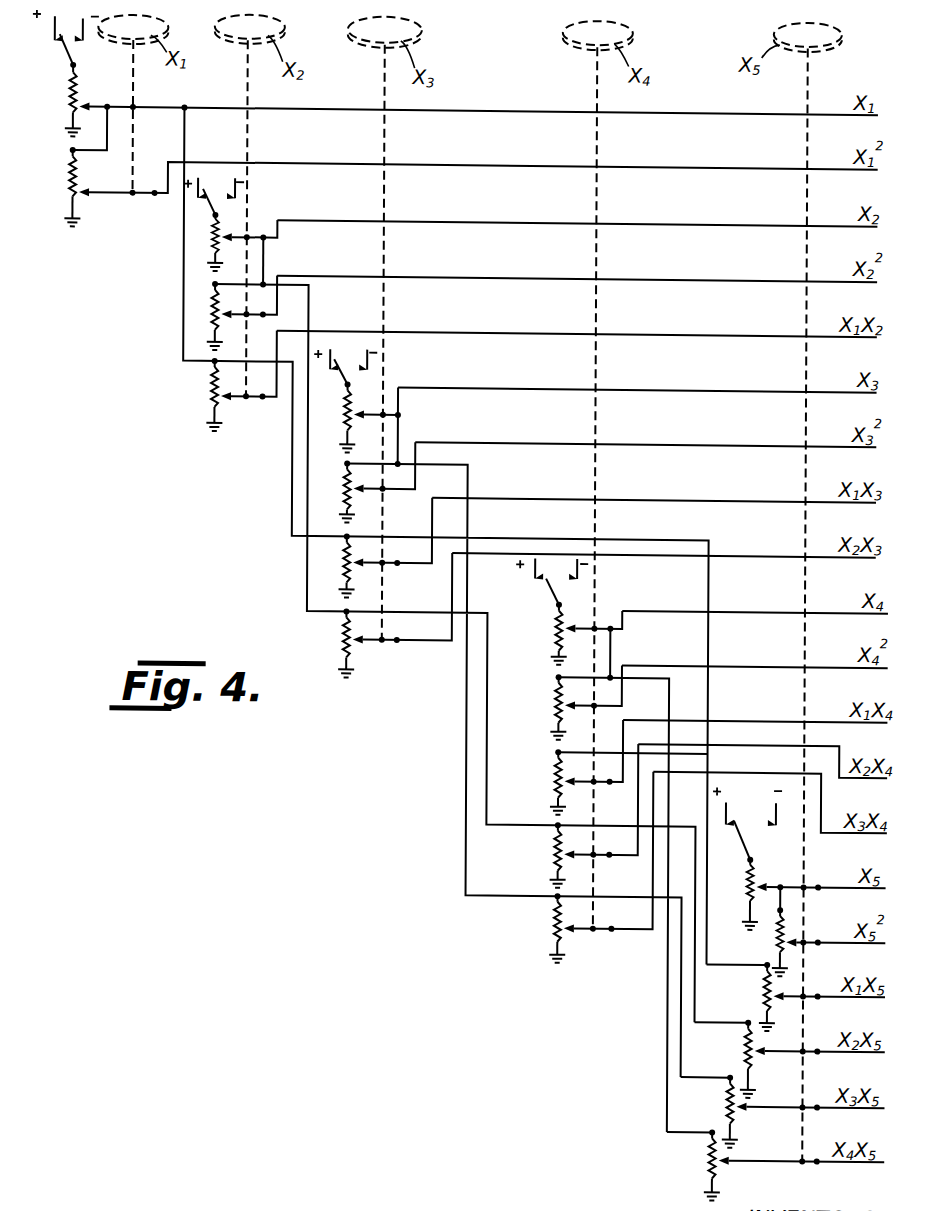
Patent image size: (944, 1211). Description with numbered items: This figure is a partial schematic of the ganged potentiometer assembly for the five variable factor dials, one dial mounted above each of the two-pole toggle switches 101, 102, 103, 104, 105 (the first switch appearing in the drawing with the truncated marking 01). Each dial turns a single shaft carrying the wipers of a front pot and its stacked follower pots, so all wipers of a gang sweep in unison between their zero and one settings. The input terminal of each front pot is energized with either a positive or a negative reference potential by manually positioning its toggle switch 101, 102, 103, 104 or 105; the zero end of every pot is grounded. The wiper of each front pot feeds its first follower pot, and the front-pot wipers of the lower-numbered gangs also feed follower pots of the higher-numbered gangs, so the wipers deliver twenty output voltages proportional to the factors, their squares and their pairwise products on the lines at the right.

The two-pole toggle switch 101 is at (68, 118).
The first multiplier unit (X1 potentiometer chain with REF switch) 01 is at (60, 53).
The two-pole toggle switch 102 is at (217, 203).
The two-pole toggle switch 103 is at (352, 378).
The two-pole toggle switch 104 is at (547, 592).
The two-pole toggle switch 105 is at (741, 831).